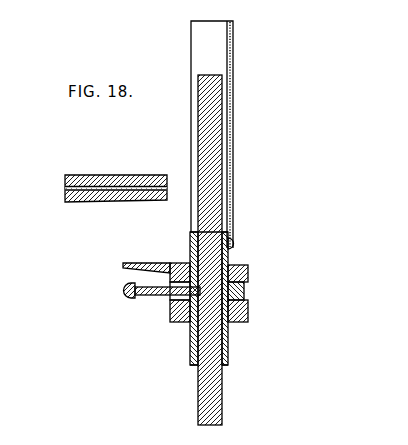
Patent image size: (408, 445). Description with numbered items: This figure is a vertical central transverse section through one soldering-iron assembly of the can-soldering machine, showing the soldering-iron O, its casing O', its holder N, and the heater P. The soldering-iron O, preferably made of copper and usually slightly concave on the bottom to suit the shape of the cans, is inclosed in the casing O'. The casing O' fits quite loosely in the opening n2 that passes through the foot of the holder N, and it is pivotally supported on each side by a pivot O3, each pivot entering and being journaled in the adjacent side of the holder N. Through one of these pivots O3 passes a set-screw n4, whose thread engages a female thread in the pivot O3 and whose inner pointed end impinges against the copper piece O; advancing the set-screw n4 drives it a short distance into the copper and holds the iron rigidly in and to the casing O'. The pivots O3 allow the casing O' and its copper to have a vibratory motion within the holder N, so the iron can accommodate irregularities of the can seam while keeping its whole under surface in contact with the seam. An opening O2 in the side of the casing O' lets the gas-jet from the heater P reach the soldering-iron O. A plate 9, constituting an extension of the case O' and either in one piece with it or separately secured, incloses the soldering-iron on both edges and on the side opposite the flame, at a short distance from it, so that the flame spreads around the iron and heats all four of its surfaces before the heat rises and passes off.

The plate 9 is at (255, 137).
The opening n2 is at (230, 249).
The soldering-iron O is at (209, 250).
The casing O' is at (225, 297).
The opening O2 is at (196, 163).
The pivot O3 is at (245, 292).
The holder N is at (169, 262).
The set-screw n4 is at (127, 292).
The heater P is at (107, 182).